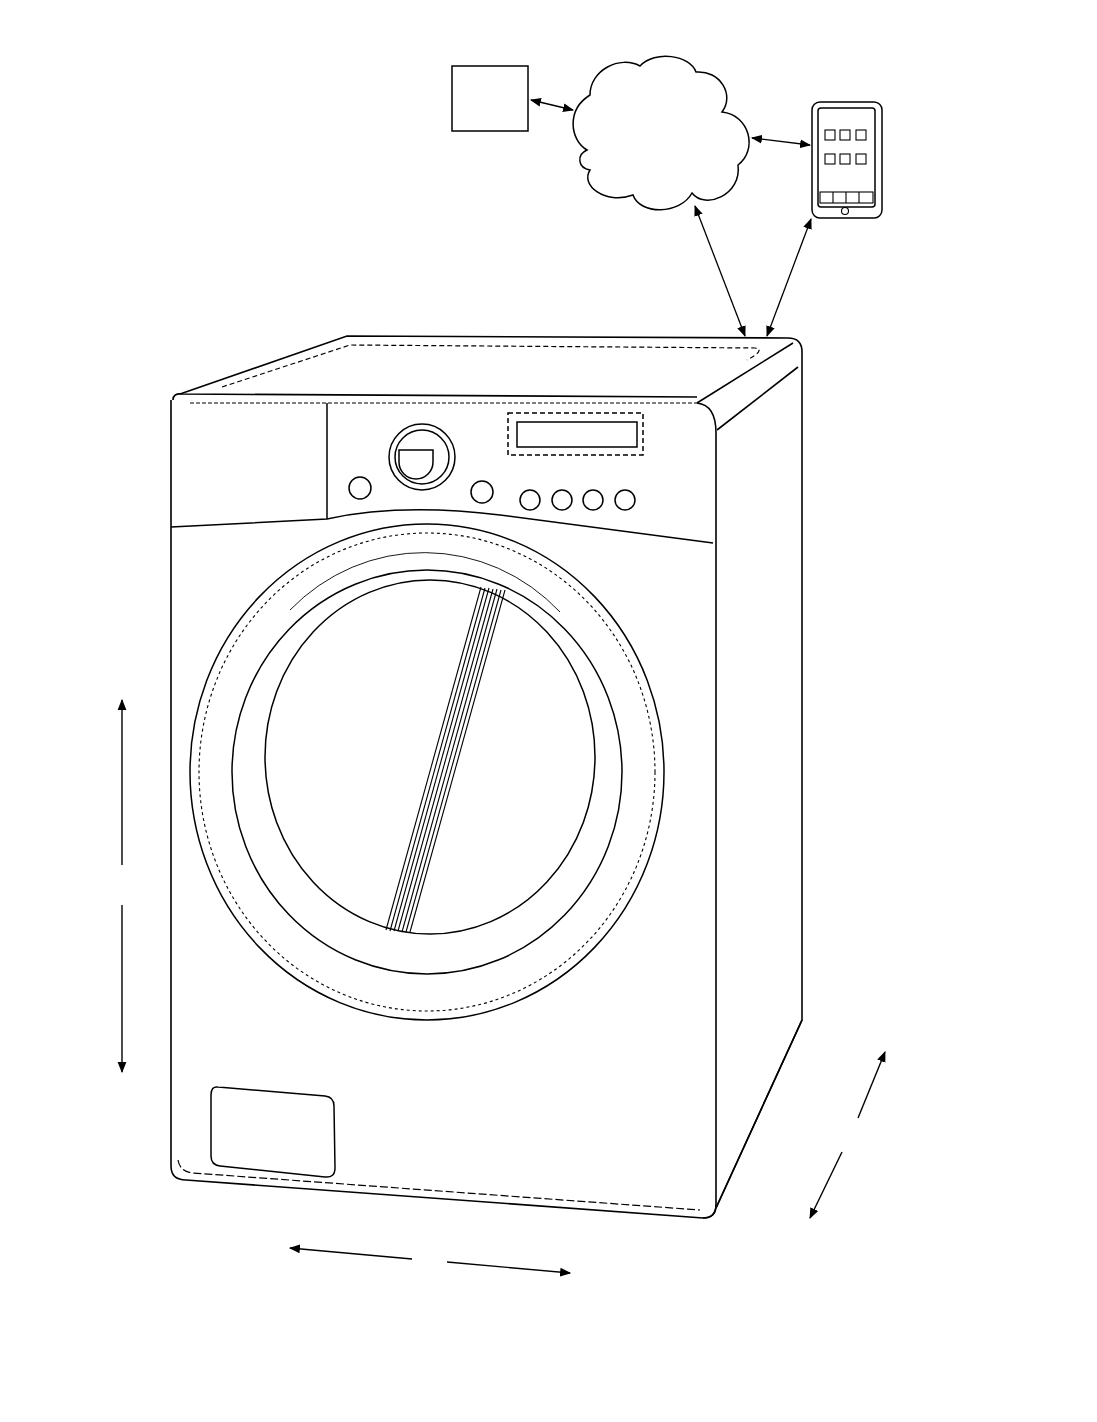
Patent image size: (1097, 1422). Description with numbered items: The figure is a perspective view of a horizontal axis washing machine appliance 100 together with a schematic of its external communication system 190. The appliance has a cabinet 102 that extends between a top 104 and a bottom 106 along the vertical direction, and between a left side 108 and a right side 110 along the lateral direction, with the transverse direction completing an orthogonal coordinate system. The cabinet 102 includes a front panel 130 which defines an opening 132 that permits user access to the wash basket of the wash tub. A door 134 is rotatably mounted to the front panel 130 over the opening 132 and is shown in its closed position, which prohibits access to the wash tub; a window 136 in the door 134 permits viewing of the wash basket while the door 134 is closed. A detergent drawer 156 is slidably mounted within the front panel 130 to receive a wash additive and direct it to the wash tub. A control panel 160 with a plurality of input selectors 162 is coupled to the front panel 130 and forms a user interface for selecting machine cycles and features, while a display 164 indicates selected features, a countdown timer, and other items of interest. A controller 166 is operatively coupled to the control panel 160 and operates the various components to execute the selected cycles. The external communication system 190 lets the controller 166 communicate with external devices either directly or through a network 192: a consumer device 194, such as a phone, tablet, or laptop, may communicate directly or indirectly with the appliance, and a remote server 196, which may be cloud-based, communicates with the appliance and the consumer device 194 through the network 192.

The washing machine appliance 100 is at (148, 310).
The cabinet 102 is at (782, 628).
The top 104 is at (820, 345).
The bottom 106 is at (802, 1068).
The left side 108 is at (176, 1185).
The right side 110 is at (713, 1225).
The front panel 130 is at (191, 586).
The opening 132 is at (625, 636).
The door 134 is at (635, 732).
The window 136 is at (377, 714).
The detergent drawer 156 is at (190, 432).
The control panel 160 is at (487, 428).
The input selectors 162 is at (417, 447).
The display 164 is at (588, 432).
The controller 166 is at (567, 415).
The external communication system 190 is at (829, 62).
The network 192 is at (668, 151).
The consumer device 194 is at (882, 173).
The remote server 196 is at (506, 113).